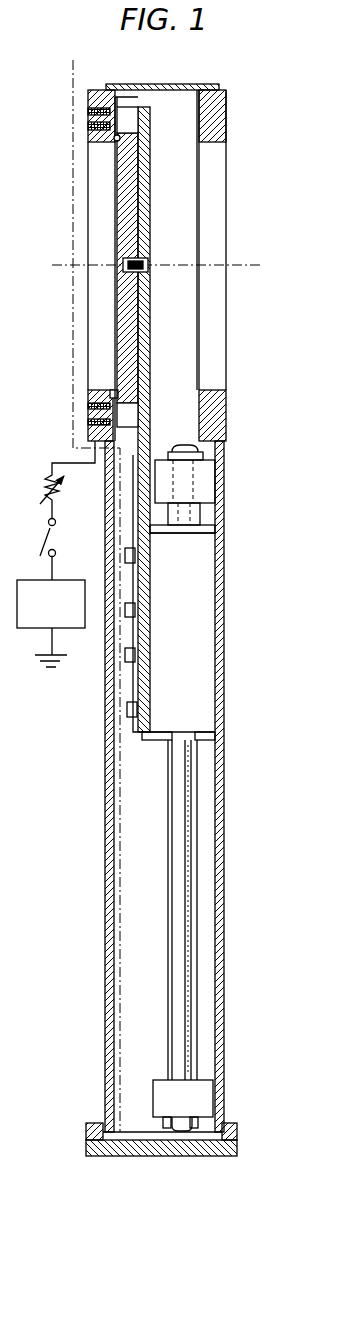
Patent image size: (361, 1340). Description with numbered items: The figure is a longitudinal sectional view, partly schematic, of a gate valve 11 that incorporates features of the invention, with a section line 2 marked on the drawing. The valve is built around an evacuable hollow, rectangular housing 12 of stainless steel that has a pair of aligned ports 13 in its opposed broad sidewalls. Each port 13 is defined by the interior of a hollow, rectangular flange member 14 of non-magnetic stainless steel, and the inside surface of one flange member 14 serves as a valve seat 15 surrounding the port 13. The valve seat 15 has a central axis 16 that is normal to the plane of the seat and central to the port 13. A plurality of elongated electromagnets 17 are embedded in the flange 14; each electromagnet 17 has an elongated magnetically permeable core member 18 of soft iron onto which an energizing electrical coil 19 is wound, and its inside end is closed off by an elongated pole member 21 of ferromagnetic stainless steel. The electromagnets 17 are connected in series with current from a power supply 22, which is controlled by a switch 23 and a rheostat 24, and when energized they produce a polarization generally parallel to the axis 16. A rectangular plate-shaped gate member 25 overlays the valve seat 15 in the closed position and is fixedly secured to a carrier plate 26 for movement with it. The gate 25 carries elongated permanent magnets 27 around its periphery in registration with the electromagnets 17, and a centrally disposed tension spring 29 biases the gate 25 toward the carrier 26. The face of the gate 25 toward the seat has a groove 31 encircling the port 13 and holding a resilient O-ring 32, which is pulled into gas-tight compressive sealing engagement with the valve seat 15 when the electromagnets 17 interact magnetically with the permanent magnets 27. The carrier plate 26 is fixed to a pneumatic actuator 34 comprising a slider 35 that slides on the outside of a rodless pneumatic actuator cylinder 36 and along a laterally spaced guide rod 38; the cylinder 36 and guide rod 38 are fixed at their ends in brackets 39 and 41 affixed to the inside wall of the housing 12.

The section line 2- 2 is at (73, 78).
The gate valve 11 is at (236, 322).
The housing 12 is at (187, 83).
The ports 13 is at (98, 390).
The flange members 14 is at (226, 108).
The valve seat 15 is at (117, 150).
The central axis 16 is at (243, 262).
The electromagnets 17 is at (80, 123).
The core member 18 is at (88, 112).
The electrical coil 19 is at (97, 90).
The pole member 21 is at (115, 97).
The power supply 22 is at (64, 580).
The switch 23 is at (42, 538).
The rheostat 24 is at (42, 488).
The gate member 25 is at (125, 216).
The carrier plate 26 is at (150, 213).
The permanent magnets 27 is at (148, 113).
The tension spring 29 is at (148, 268).
The groove 31 is at (121, 139).
The O-ring 32 is at (120, 141).
The pneumatic actuator 34 is at (205, 578).
The slider 35 is at (192, 642).
The pneumatic actuator cylinder 36 is at (196, 800).
The guide rod 38 is at (185, 845).
The bracket 39 is at (205, 478).
The bracket 41 is at (193, 1112).